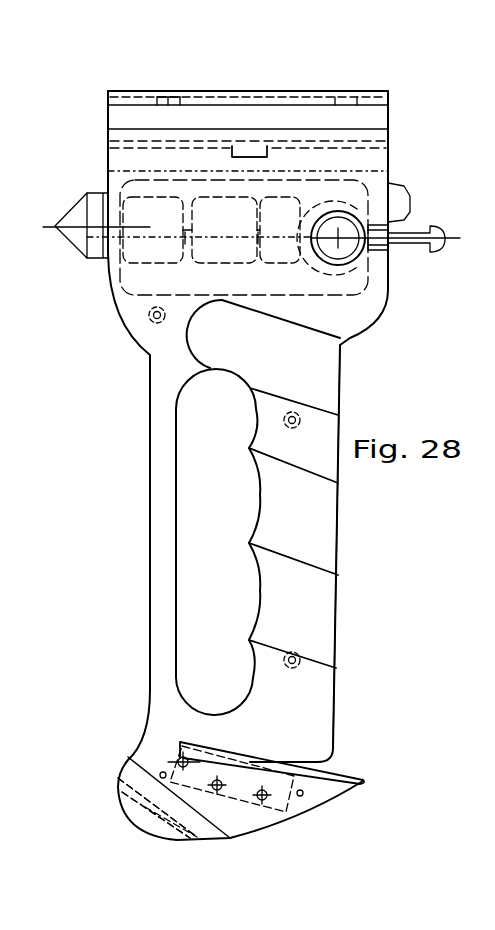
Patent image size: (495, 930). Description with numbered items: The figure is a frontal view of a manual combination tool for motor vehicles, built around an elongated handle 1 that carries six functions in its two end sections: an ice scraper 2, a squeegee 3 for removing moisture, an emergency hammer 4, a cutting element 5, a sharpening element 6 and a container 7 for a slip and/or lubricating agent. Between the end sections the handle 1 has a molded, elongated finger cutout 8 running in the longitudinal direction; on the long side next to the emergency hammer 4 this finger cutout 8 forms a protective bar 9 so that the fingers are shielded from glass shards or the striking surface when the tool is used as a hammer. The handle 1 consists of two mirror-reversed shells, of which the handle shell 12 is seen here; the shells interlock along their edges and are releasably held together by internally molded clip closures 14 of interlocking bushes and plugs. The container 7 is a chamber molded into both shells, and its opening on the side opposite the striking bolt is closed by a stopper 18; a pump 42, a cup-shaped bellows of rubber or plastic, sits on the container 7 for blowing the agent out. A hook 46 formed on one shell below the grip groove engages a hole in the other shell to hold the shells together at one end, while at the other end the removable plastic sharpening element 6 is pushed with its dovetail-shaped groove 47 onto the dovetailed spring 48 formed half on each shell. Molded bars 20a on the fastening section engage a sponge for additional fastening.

The handle 1 is at (346, 528).
The ice scraper 2 is at (258, 91).
The squeegee 3 is at (258, 91).
The emergency hammer 4 is at (97, 247).
The cutting element 5 is at (342, 760).
The sharpening element 6 is at (114, 797).
The container 7 is at (353, 203).
The finger cutout 8 is at (200, 498).
The protective bar 9 is at (165, 447).
The handle shell 12 is at (340, 640).
The clip closure 14 is at (302, 422).
The stopper 18 is at (422, 232).
The molded bars 20a is at (168, 100).
The pump 42 is at (345, 250).
The hook 46 is at (263, 147).
The dovetail-shaped groove 47 is at (153, 808).
The spring 48 is at (153, 808).